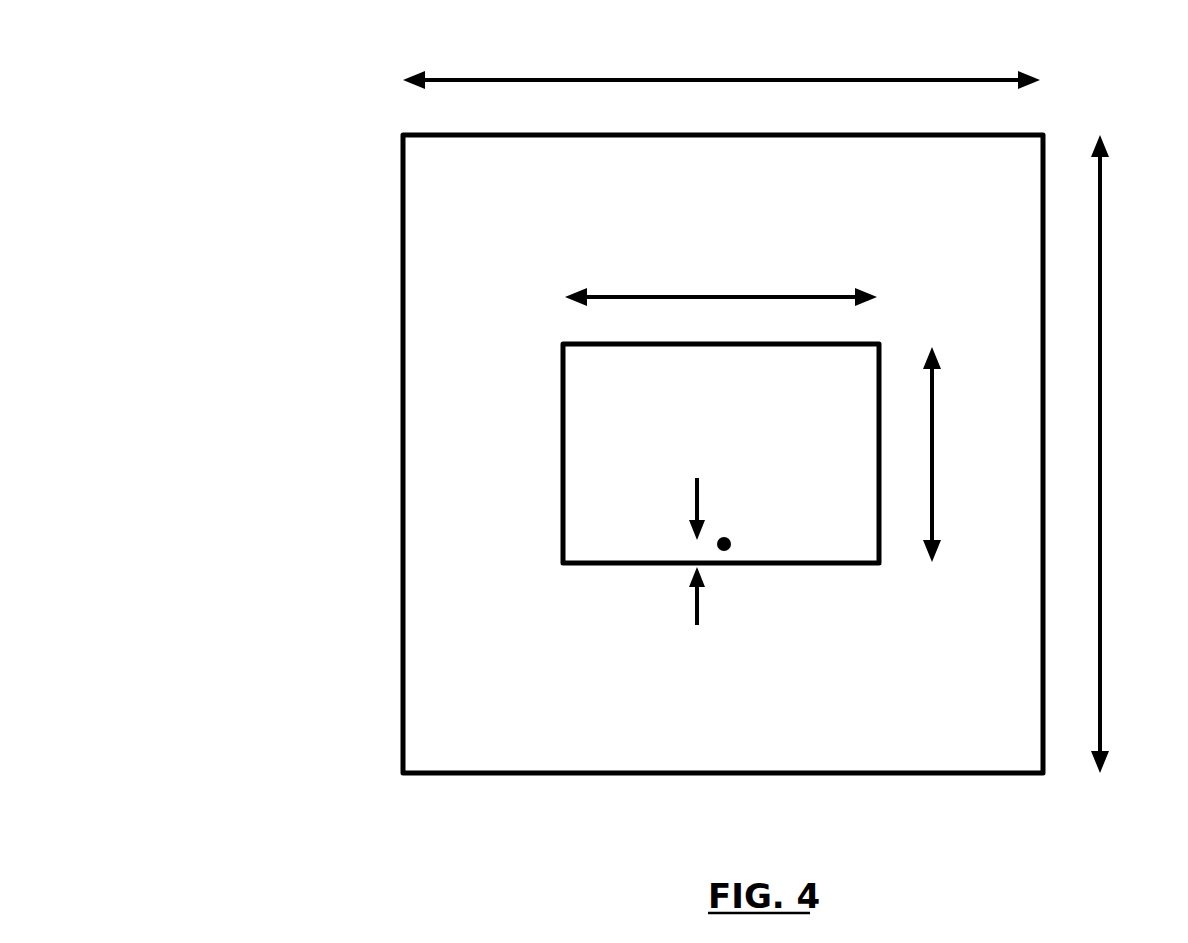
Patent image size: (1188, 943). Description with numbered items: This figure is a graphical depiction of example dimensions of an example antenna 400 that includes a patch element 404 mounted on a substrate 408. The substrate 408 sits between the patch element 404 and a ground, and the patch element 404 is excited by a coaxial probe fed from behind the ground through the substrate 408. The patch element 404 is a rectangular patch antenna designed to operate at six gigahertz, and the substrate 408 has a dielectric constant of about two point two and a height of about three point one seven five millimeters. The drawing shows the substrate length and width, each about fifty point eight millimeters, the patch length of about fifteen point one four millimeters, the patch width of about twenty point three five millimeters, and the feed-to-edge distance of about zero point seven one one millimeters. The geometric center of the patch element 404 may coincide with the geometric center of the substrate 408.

The antenna 400 is at (288, 49).
The substrate 408 is at (403, 290).
The patch element 404 is at (562, 457).